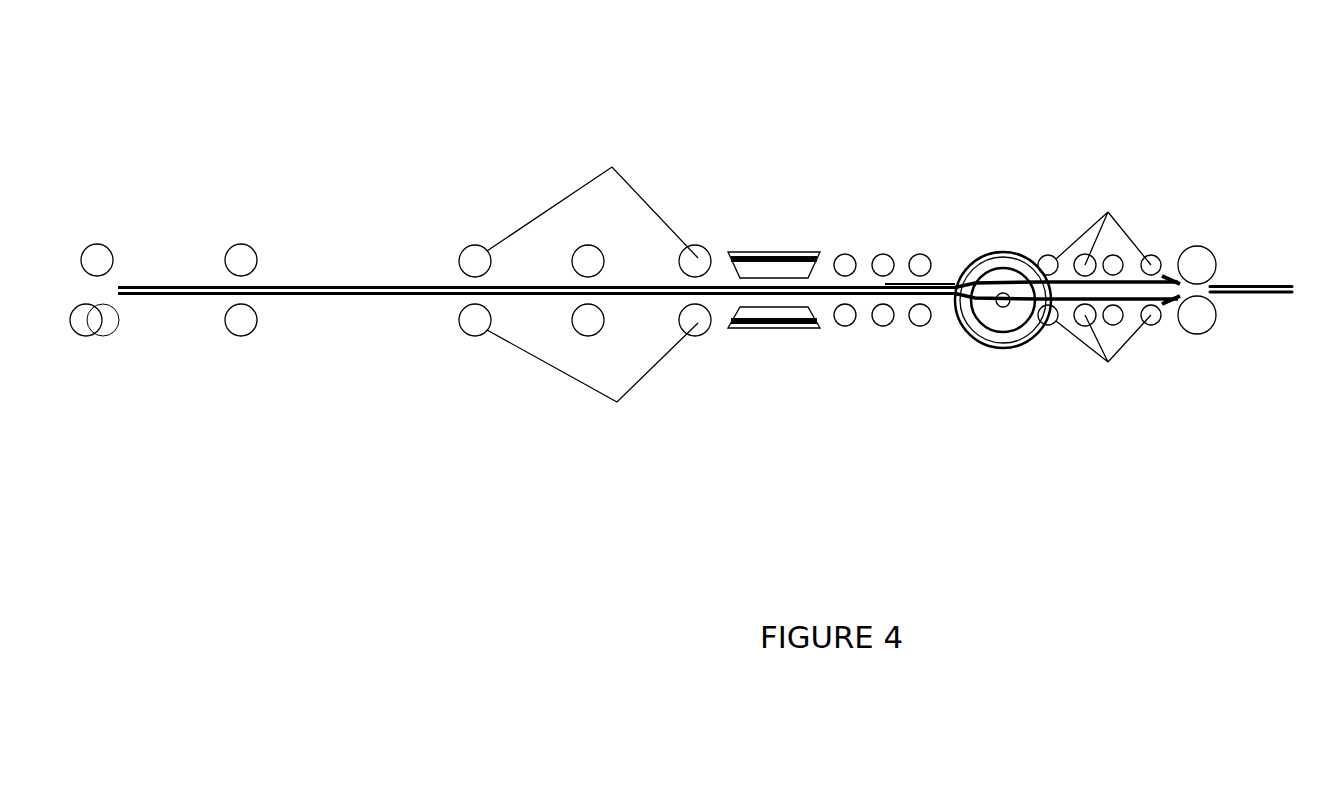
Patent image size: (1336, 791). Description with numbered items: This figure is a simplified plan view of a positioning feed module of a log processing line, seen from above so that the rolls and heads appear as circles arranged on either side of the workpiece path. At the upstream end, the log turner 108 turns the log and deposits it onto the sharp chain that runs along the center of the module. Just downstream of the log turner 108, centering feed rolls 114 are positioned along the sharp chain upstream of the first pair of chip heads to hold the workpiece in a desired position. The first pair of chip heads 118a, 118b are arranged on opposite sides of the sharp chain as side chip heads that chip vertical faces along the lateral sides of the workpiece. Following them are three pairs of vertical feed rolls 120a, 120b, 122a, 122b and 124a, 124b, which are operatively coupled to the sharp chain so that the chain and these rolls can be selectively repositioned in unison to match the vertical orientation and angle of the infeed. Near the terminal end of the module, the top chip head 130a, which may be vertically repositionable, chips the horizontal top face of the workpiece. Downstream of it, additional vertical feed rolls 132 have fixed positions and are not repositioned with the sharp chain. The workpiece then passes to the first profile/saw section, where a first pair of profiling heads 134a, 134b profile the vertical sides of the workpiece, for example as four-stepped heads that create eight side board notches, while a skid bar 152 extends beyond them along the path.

The log turner 108 is at (110, 248).
The centering feed rolls 114 is at (237, 245).
The chip head 118a is at (775, 250).
The chip head 118b is at (775, 330).
The vertical feed roll 120a is at (843, 254).
The vertical feed roll 120b is at (843, 327).
The vertical feed roll 122a is at (881, 254).
The vertical feed roll 122b is at (881, 327).
The vertical feed roll 124a is at (919, 254).
The vertical feed roll 124b is at (919, 327).
The chip head 130a is at (1012, 255).
The vertical feed rolls 132 is at (1108, 258).
The profiling head 134a is at (1198, 258).
The profiling head 134b is at (1200, 335).
The skid bar 152 is at (1235, 283).